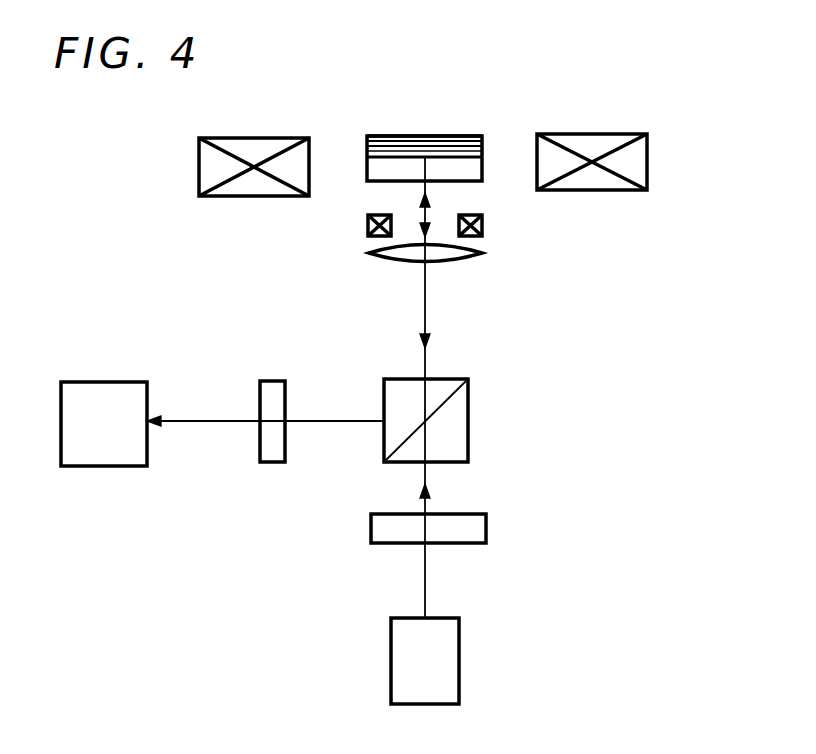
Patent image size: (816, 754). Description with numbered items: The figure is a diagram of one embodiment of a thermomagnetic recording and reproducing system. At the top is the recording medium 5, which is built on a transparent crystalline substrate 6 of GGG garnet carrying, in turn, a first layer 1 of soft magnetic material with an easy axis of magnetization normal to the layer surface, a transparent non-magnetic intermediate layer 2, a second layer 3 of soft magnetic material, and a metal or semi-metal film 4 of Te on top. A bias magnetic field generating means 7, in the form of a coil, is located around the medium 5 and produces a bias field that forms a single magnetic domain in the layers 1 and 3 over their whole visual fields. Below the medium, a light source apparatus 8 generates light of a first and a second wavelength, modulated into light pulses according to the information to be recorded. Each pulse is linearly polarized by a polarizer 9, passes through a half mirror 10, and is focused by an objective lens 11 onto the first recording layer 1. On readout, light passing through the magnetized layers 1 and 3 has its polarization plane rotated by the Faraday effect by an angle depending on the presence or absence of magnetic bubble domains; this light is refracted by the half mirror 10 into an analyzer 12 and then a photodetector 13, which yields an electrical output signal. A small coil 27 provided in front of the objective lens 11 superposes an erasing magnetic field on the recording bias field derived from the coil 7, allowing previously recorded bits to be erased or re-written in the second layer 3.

The first layer of soft magnetic material 1 is at (366, 166).
The transparent non-magnetic intermediate layer 2 is at (376, 146).
The second layer of soft magnetic material 3 is at (402, 150).
The metal film or semi-metal film 4 is at (457, 154).
The medium 5 is at (482, 170).
The transparent crystalline substrate 6 is at (367, 176).
The bias magnetic field generating means 7 is at (647, 170).
The light source apparatus 8 is at (459, 680).
The polarizer 9 is at (486, 528).
The half mirror 10 is at (455, 462).
The objective lens 11 is at (468, 262).
The analyzer 12 is at (272, 462).
The photodetector 13 is at (100, 466).
The small coil 27 is at (482, 228).